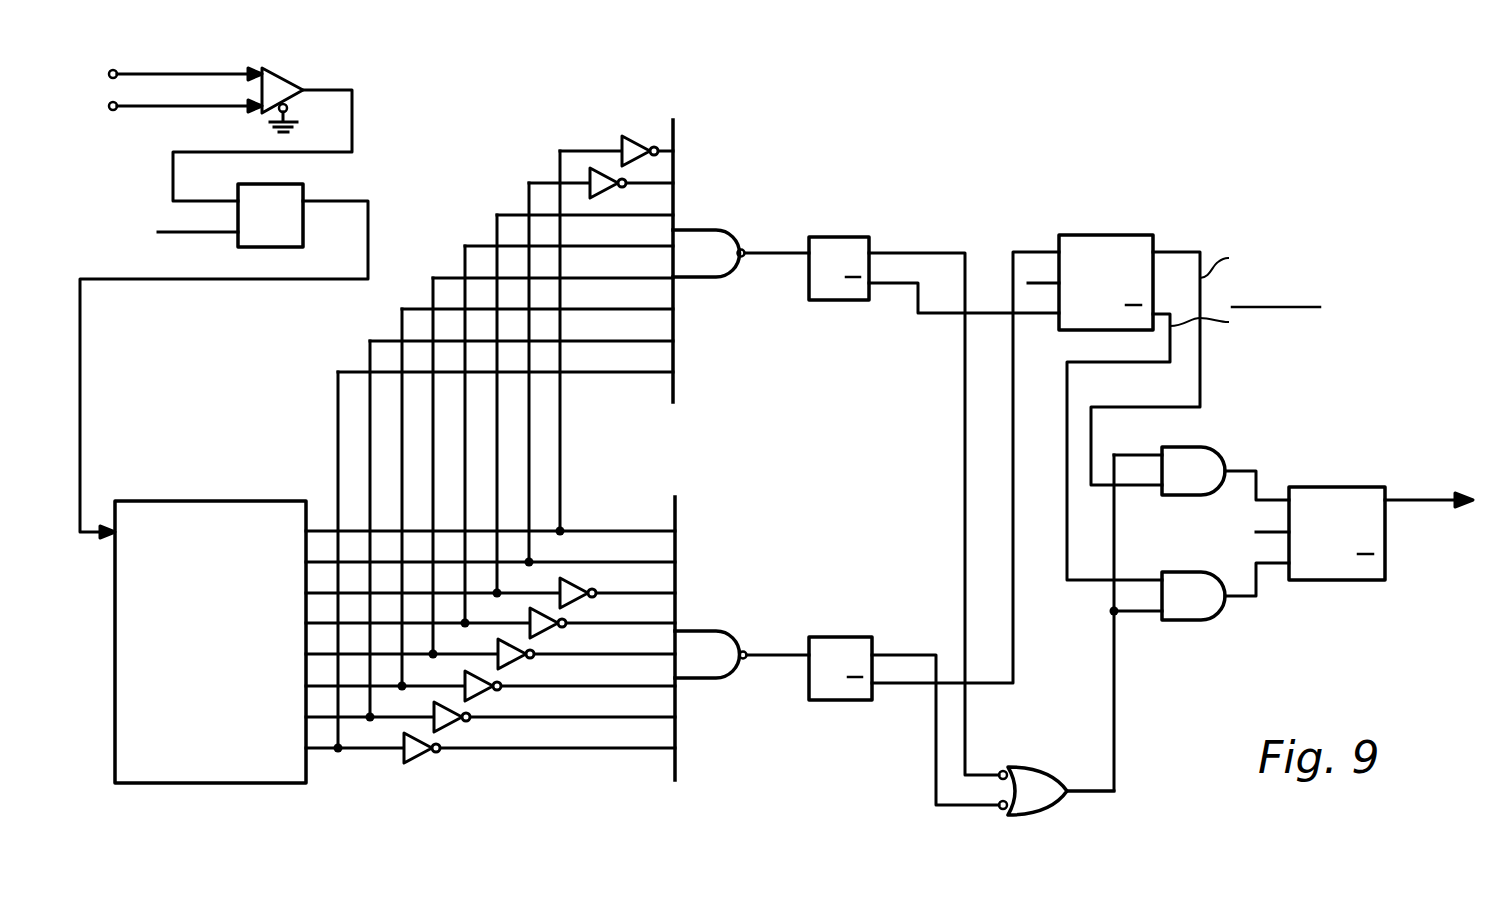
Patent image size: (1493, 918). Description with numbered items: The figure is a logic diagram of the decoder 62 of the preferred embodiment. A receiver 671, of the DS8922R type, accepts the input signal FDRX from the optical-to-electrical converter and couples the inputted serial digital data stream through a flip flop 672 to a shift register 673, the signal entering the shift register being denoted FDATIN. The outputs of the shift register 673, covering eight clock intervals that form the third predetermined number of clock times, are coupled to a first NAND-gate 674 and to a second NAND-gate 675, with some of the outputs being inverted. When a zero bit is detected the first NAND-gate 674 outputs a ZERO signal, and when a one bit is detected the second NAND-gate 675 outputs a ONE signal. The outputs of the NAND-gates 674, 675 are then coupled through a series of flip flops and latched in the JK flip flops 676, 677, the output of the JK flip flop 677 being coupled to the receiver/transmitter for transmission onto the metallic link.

The decoder 62 is at (958, 112).
The receiver 671 is at (292, 78).
The flip flop 672 is at (290, 184).
The shift register 673 is at (200, 500).
The first NAND-gate 674 is at (700, 230).
The second NAND-gate 675 is at (702, 631).
The JK flip flop 676 is at (1106, 235).
The JK flip flop 677 is at (1344, 487).